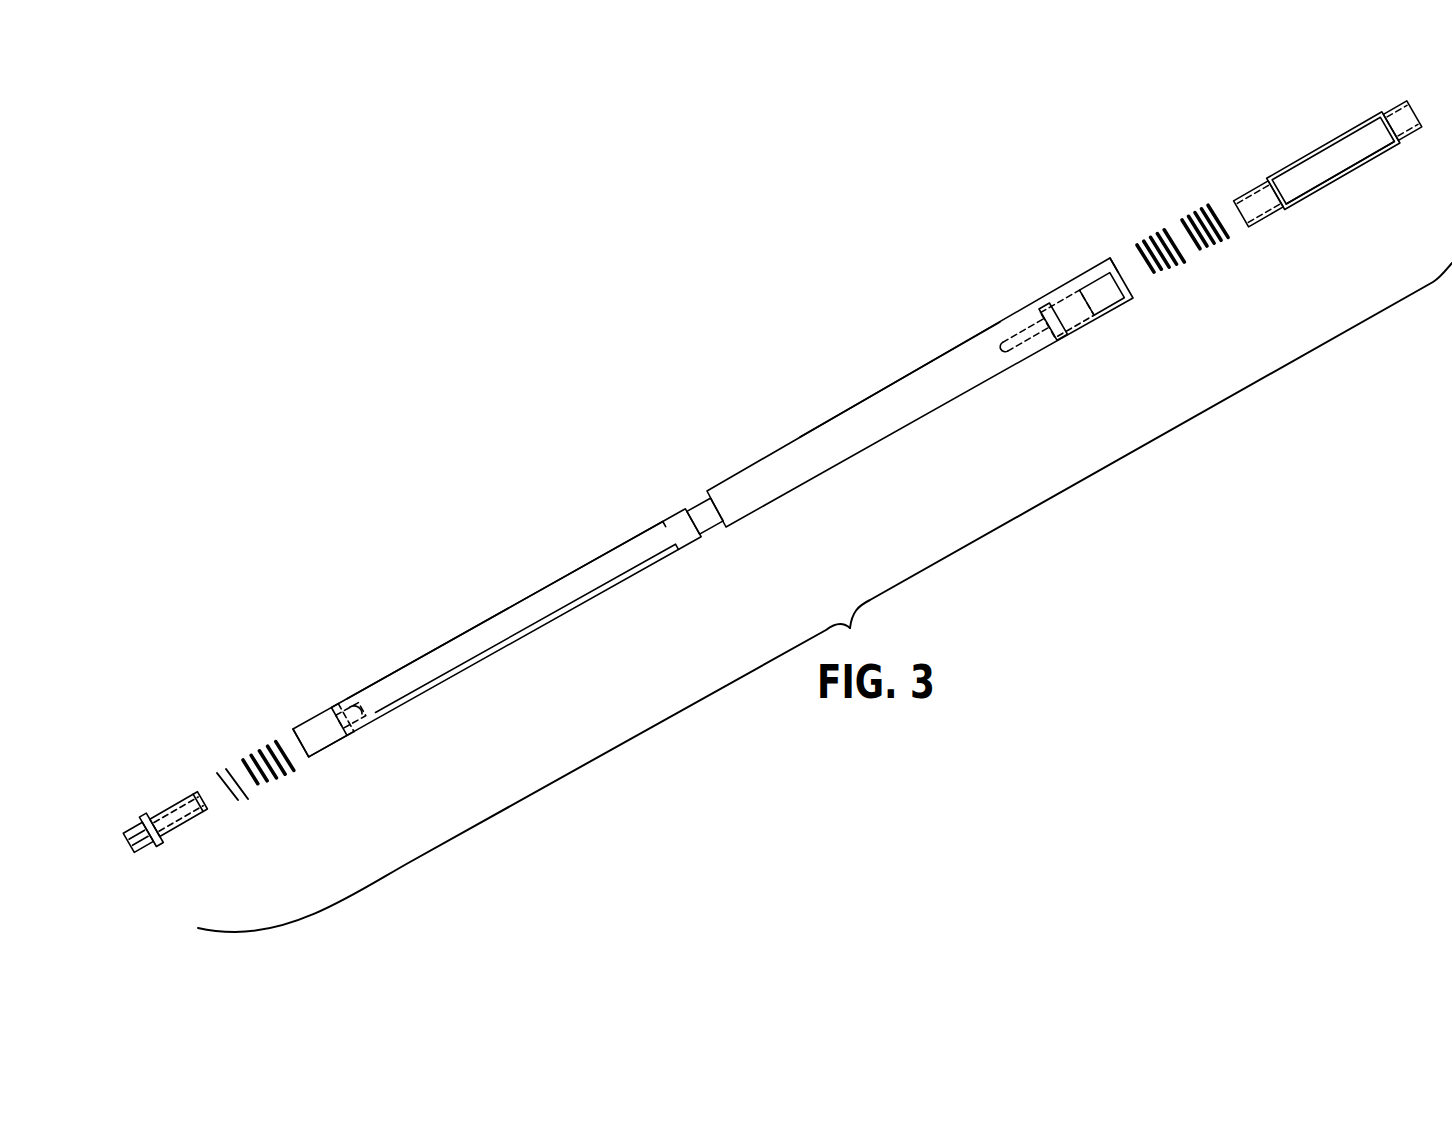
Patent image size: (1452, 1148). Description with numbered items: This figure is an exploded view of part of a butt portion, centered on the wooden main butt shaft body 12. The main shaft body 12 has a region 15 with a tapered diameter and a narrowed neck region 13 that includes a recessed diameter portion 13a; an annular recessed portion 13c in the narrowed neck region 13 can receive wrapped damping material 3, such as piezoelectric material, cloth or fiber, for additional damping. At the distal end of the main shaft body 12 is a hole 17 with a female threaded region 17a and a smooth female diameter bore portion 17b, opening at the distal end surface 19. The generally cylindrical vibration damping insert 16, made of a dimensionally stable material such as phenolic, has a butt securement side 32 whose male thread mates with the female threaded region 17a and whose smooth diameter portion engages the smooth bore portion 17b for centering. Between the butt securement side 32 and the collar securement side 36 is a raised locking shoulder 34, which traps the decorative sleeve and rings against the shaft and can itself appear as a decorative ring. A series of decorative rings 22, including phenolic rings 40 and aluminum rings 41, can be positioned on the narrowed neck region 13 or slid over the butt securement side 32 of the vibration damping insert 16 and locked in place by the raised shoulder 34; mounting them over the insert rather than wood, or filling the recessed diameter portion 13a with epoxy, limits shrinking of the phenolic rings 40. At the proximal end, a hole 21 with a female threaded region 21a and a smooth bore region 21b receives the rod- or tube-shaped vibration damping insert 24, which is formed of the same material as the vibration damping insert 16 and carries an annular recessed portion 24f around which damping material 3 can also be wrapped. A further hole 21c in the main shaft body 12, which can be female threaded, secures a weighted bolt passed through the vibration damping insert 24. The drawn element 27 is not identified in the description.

The damping material 3 is at (523, 638).
The main butt shaft body 12 is at (921, 365).
The narrowed neck region 13 is at (562, 616).
The recessed diameter portion 13a is at (718, 530).
The annular recessed portion 13c is at (462, 638).
The region with a tapered diameter 15 is at (937, 368).
The vibration damping insert 16 is at (179, 827).
The hole 17 is at (348, 721).
The female threaded region 17a is at (345, 735).
The smooth female diameter bore portion 17b is at (325, 750).
The distal end surface 19 is at (293, 741).
The hole 21 is at (1075, 295).
The female threaded region 21a is at (1060, 302).
The smooth bore region 21b is at (1097, 270).
The hole 21c is at (1022, 345).
The series of decorative rings 22 is at (215, 748).
The vibration damping insert 24 is at (1328, 181).
The annular recessed portion 24f is at (1325, 190).
The tube end opening 27 is at (1110, 262).
The butt securement side 32 is at (185, 822).
The raised locking shoulder 34 is at (167, 842).
The collar securement side 36 is at (143, 847).
The phenolic rings 40 is at (748, 511).
The aluminum rings 41 is at (240, 800).